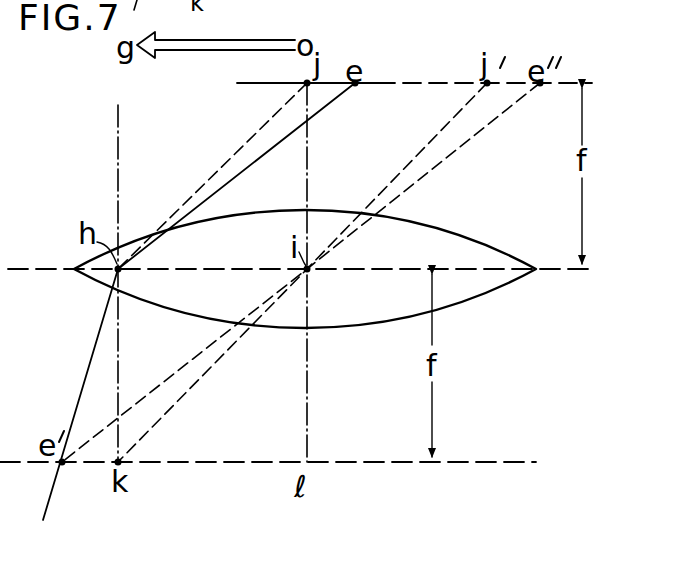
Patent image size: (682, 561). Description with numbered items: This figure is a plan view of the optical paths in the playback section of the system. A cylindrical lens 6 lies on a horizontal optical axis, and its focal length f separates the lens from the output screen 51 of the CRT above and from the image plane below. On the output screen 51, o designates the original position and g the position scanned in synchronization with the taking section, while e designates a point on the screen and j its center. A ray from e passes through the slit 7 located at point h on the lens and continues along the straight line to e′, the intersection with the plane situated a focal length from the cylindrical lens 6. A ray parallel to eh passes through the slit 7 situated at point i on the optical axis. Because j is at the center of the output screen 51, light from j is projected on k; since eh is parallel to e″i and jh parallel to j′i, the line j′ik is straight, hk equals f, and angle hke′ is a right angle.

The cylindrical lens 6 is at (505, 285).
The slit 7 is at (103, 280).
The output screen 51 is at (592, 83).